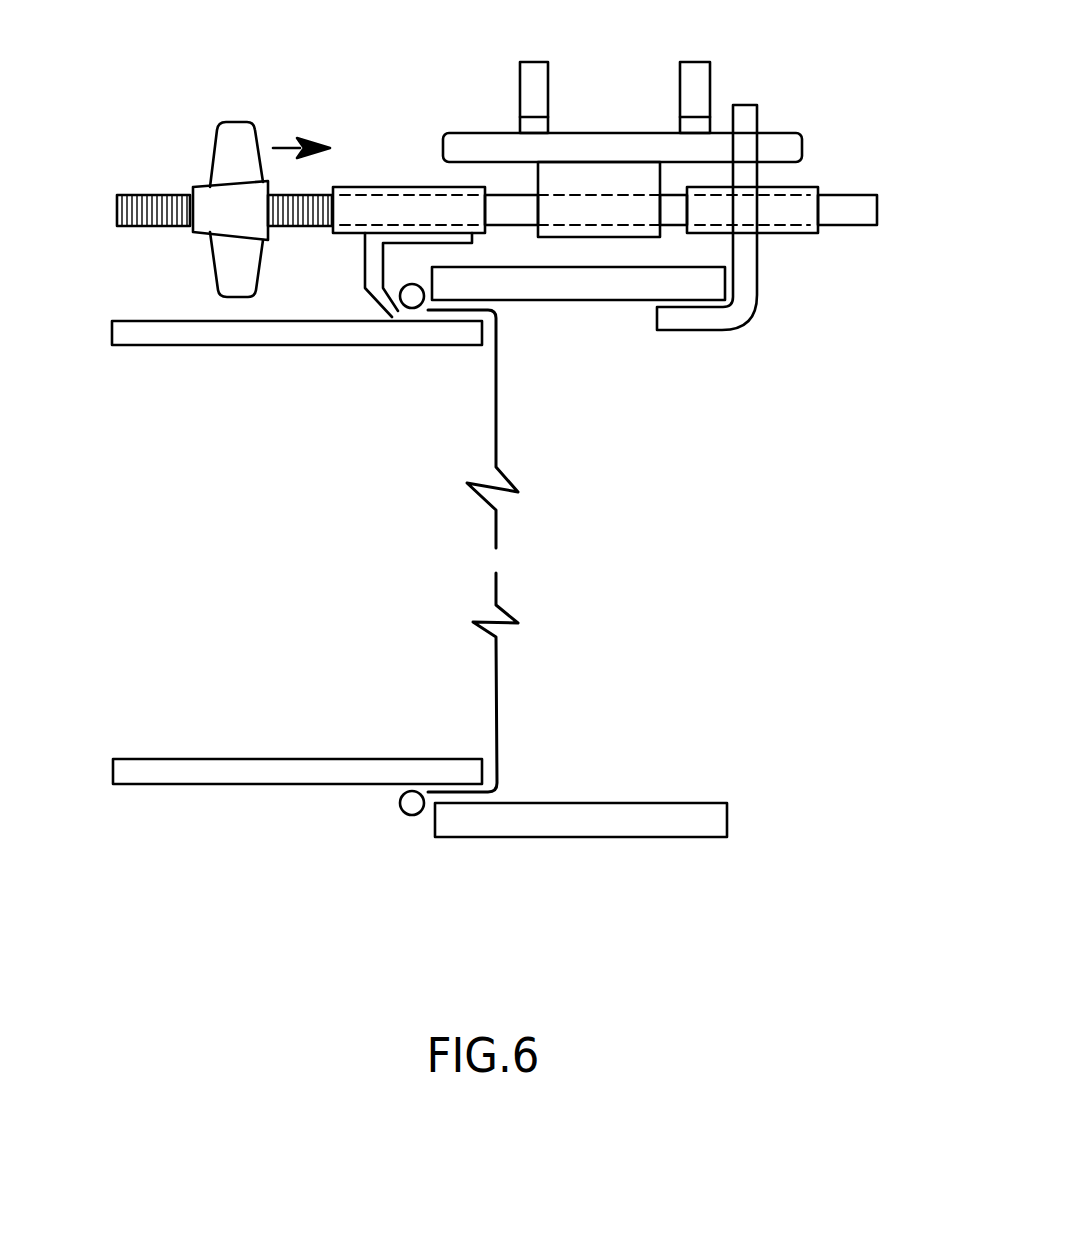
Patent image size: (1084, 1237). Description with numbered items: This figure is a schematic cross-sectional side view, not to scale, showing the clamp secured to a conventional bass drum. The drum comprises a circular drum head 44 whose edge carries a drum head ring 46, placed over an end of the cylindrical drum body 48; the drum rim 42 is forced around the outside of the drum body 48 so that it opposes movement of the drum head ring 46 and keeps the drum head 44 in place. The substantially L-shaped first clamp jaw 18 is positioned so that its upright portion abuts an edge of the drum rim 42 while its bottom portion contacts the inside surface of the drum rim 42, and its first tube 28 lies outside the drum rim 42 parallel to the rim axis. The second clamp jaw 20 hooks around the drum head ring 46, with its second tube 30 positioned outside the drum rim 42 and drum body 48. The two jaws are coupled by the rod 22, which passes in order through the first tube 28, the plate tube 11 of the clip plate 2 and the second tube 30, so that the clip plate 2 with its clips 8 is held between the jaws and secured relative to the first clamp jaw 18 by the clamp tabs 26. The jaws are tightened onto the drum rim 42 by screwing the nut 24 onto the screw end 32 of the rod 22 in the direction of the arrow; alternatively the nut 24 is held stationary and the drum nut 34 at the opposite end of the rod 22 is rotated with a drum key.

The clip plate 2 is at (643, 133).
The clips 8 is at (530, 80).
The plate tube 11 is at (582, 175).
The first clamp jaw 18 is at (760, 303).
The second clamp jaw 20 is at (372, 275).
The rod 22 is at (513, 195).
The nut 24 is at (231, 137).
The clamp tabs 26 is at (753, 204).
The first tube 28 is at (808, 235).
The second tube 30 is at (377, 205).
The screw end 32 is at (143, 207).
The drum nut 34 is at (853, 195).
The drum rim 42 is at (577, 292).
The drum head 44 is at (496, 424).
The drum head ring 46 is at (413, 305).
The drum body 48 is at (200, 333).